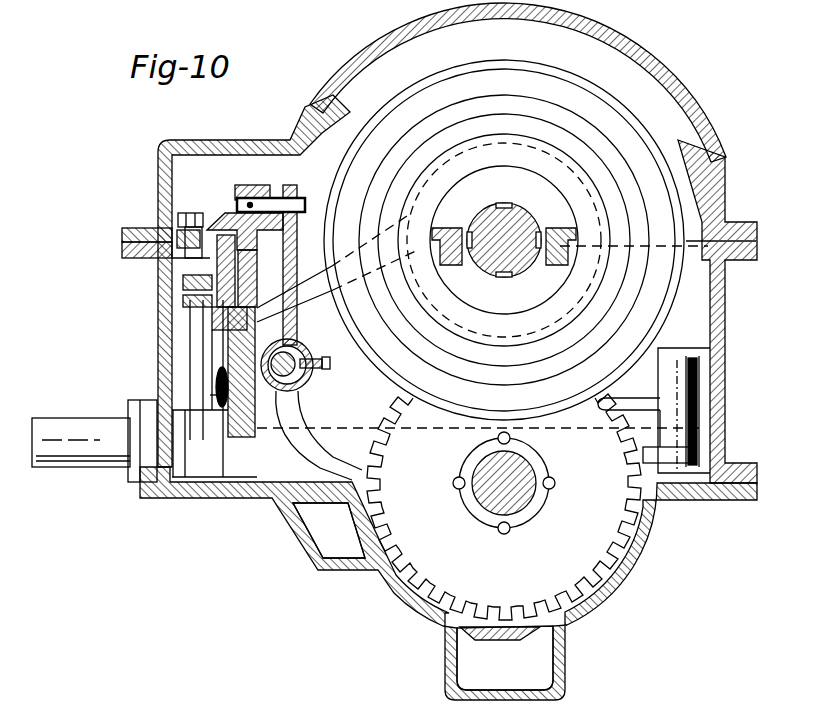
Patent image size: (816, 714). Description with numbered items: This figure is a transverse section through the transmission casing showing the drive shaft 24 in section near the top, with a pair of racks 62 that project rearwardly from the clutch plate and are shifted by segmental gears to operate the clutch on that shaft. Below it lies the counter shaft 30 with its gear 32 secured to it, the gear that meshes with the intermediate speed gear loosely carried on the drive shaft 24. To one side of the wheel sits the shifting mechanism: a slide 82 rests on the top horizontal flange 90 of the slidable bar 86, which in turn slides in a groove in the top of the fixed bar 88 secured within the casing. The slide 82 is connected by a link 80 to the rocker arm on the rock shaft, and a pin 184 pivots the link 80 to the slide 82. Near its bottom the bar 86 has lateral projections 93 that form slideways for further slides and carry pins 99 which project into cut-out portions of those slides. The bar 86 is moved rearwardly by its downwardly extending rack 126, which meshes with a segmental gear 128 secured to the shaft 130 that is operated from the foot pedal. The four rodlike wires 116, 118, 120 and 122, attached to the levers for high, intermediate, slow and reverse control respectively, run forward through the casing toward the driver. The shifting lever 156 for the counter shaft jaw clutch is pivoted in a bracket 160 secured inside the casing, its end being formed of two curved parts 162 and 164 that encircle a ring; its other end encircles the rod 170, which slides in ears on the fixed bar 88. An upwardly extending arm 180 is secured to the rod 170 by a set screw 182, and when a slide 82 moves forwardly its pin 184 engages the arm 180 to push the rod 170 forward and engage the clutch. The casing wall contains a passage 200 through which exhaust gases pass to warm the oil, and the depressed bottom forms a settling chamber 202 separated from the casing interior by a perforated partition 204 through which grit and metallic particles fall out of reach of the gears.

The drive shaft 24 is at (520, 226).
The counter shaft 30 is at (484, 499).
The gear 32 is at (413, 547).
The racks 62 is at (557, 266).
The link 80 is at (273, 152).
The slide 82 is at (225, 213).
The slidable bar 86 is at (236, 282).
The fixed bar 88 is at (323, 326).
The top horizontal flange 90 is at (210, 213).
The lateral projections 93 is at (185, 279).
The pins 99 is at (187, 296).
The wire 116 is at (217, 372).
The wire 118 is at (216, 381).
The wire 120 is at (217, 391).
The wire 122 is at (173, 410).
The rack 126 is at (188, 324).
The segmental gear 128 is at (187, 343).
The shaft 130 is at (92, 462).
The shifting lever 156 is at (315, 448).
The bracket 160 is at (702, 378).
The curved part 162 is at (635, 404).
The curved part 164 is at (660, 446).
The rod 170 is at (293, 355).
The arms 180 is at (293, 251).
The set screw 182 is at (326, 365).
The pins 184 is at (303, 200).
The passage 200 is at (318, 537).
The settling chamber 202 is at (542, 660).
The perforated partition 204 is at (476, 645).